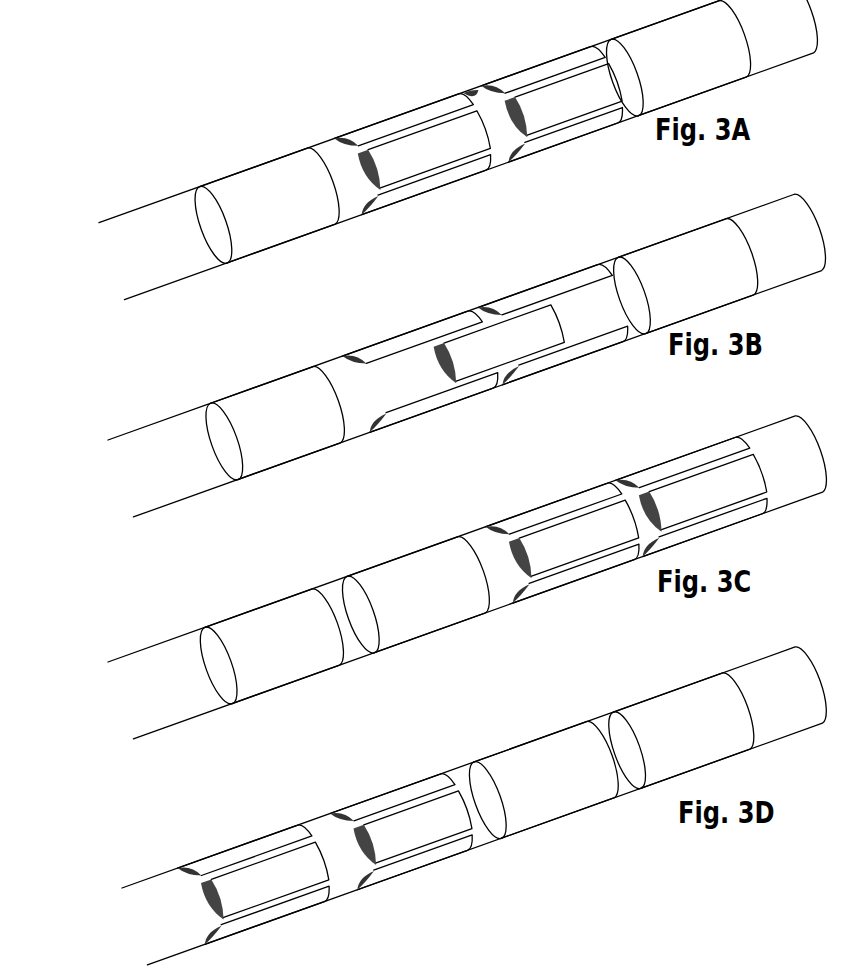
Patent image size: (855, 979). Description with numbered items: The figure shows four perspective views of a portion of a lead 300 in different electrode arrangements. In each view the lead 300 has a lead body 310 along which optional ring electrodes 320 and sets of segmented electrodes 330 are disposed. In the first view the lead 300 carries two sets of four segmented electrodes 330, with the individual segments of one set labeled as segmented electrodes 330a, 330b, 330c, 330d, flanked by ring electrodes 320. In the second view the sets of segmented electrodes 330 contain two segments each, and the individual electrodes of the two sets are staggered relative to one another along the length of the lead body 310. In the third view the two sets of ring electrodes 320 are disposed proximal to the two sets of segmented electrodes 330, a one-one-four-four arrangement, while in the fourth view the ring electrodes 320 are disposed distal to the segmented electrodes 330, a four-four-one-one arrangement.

In FIG. 3A, the lead 300 is at (196, 145).
In FIG. 3B, the lead 300 is at (208, 387).
In FIG. 3C, the lead 300 is at (306, 563).
In FIG. 3D, the lead 300 is at (445, 752).
In FIG. 3A, the lead body 310 is at (155, 208).
In FIG. 3B, the lead body 310 is at (162, 427).
In FIG. 3C, the lead body 310 is at (163, 652).
In FIG. 3D, the lead body 310 is at (158, 882).
In FIG. 3A, the ring electrodes 320 is at (253, 173).
In FIG. 3B, the ring electrodes 320 is at (262, 390).
In FIG. 3C, the ring electrodes 320 is at (263, 613).
In FIG. 3D, the ring electrodes 320 is at (550, 745).
In FIG. 3A, the segmented electrodes 330 is at (467, 140).
In FIG. 3B, the segmented electrodes 330 is at (540, 295).
In FIG. 3C, the segmented electrodes 330 is at (618, 532).
In FIG. 3D, the segmented electrodes 330 is at (318, 878).
In FIG. 3A, the top strip of slotted segment 330a is at (574, 49).
In FIG. 3A, the bottom strip of slotted segment 330b is at (585, 128).
In FIG. 3A, the front strip of slotted segment 330c is at (563, 103).
In FIG. 3A, the rear strip of slotted segment 330d is at (483, 88).